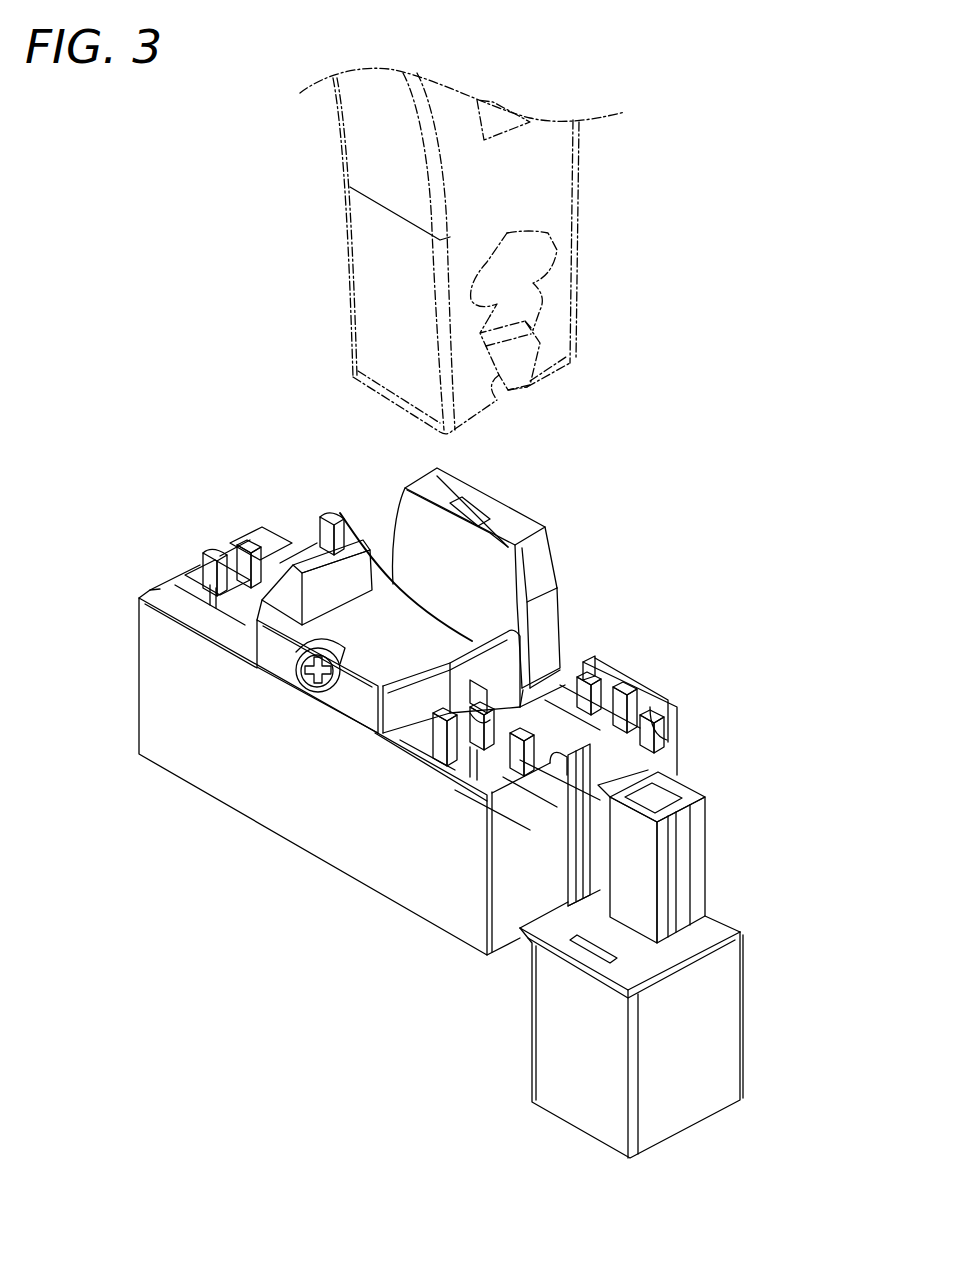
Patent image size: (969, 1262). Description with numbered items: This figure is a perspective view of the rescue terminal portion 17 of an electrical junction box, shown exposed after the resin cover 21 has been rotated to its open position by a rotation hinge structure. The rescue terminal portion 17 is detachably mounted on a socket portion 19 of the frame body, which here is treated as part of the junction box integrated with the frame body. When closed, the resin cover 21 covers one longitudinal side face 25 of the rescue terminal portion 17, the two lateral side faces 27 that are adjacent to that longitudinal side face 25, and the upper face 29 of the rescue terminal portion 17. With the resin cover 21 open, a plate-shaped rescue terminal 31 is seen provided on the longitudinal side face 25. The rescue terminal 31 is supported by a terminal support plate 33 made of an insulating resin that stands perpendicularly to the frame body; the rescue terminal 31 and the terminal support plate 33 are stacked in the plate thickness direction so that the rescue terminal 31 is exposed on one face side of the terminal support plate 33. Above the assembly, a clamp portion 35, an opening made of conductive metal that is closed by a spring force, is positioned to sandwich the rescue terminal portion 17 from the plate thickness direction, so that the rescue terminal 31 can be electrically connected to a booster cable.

The rescue terminal portion 17 is at (510, 533).
The socket portion 19 is at (235, 836).
The resin cover 21 is at (357, 712).
The longitudinal side face 25 is at (467, 585).
The lateral side faces 27 is at (545, 643).
The upper face 29 is at (513, 523).
The rescue terminal 31 is at (394, 500).
The terminal support plate 33 is at (553, 552).
The clamp portion 35 is at (345, 237).